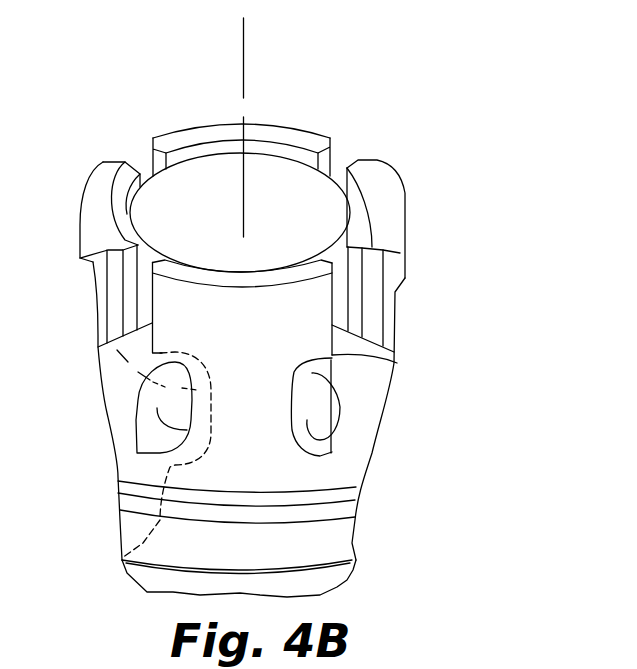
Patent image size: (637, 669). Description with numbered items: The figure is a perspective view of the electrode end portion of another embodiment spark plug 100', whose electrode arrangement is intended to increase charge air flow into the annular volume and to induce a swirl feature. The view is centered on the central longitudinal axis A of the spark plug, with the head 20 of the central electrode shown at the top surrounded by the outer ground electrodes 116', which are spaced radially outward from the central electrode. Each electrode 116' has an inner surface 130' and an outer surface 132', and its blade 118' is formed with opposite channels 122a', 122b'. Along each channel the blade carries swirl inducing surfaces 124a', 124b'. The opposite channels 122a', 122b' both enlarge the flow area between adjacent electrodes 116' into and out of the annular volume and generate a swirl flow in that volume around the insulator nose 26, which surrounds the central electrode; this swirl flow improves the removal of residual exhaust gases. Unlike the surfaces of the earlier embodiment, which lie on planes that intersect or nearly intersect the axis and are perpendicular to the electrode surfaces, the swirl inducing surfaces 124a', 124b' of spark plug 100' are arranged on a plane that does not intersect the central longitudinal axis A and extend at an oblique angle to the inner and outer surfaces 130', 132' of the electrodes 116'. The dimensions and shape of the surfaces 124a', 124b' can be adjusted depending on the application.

The central longitudinal axis A is at (244, 52).
The head 20 is at (278, 193).
The electrode 116' is at (273, 206).
The inner surface 130' is at (334, 329).
The spark plug 100' is at (317, 413).
The blade 118' is at (280, 345).
The channel 122a' is at (106, 394).
The channel 122b' is at (373, 407).
The swirl inducing surface 124a' is at (135, 470).
The swirl inducing surface 124b' is at (366, 433).
The insulator nose 26 is at (148, 405).
The outer surface 132' is at (237, 510).